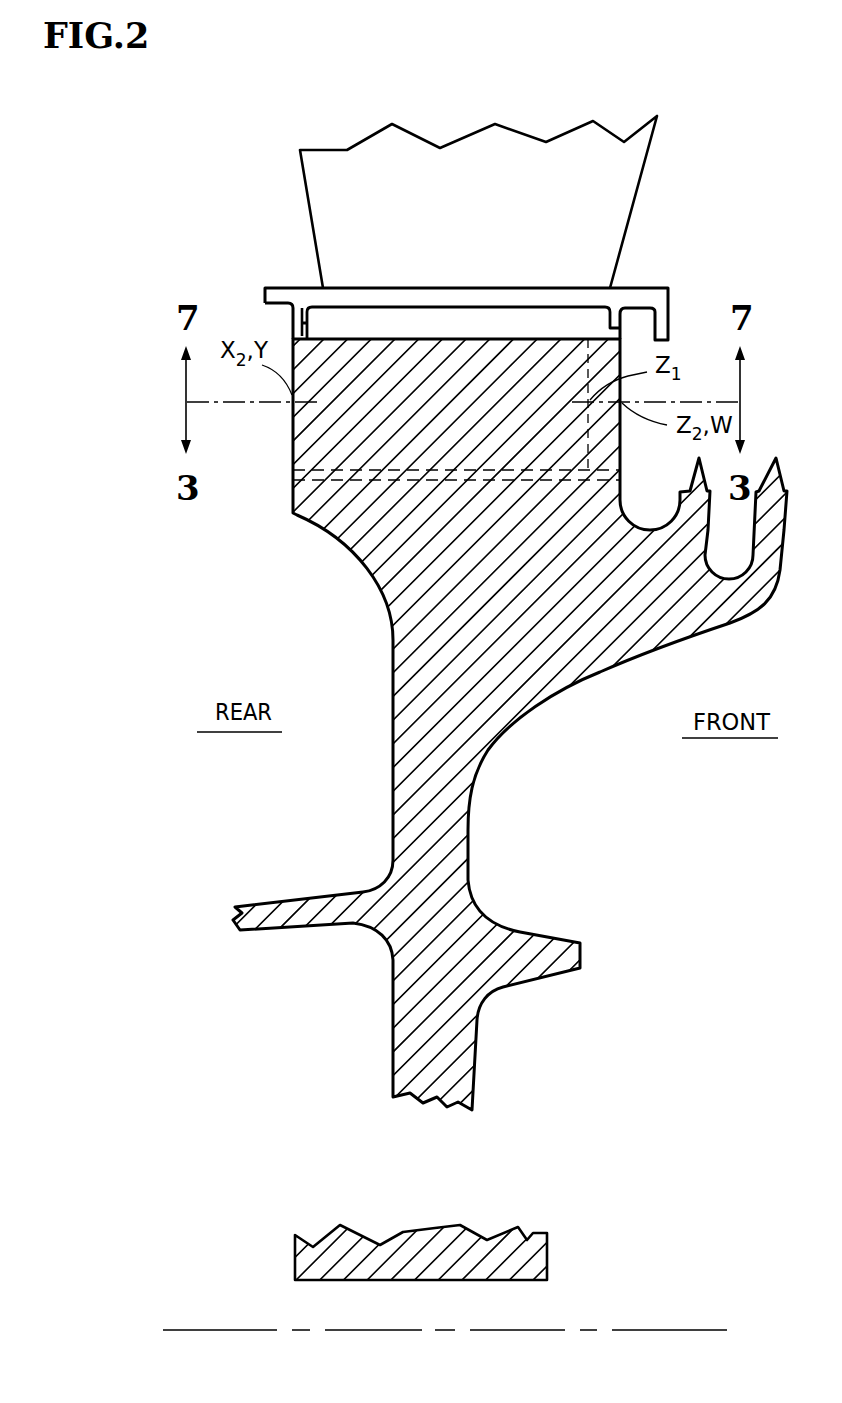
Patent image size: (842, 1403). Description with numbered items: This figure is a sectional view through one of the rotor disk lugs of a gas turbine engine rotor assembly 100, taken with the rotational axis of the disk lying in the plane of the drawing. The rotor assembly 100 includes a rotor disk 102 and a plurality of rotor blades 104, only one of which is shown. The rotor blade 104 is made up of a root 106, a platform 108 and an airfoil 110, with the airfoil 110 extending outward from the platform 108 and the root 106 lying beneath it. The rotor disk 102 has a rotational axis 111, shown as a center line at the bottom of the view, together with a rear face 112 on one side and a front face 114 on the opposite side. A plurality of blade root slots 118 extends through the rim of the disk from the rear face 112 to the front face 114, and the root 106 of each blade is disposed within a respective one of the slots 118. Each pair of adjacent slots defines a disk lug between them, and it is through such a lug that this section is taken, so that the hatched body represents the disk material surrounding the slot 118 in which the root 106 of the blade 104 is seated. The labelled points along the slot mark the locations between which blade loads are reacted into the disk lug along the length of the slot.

The gas turbine engine rotor assembly 100 is at (268, 208).
The rotor disk 102 is at (395, 1018).
The rotor blade 104 is at (645, 184).
The root 106 is at (456, 508).
The platform 108 is at (635, 288).
The airfoil 110 is at (510, 201).
The rotational axis 111 is at (653, 1330).
The rear face 112 is at (293, 495).
The front face 114 is at (622, 452).
The blade root slot 118 is at (347, 480).